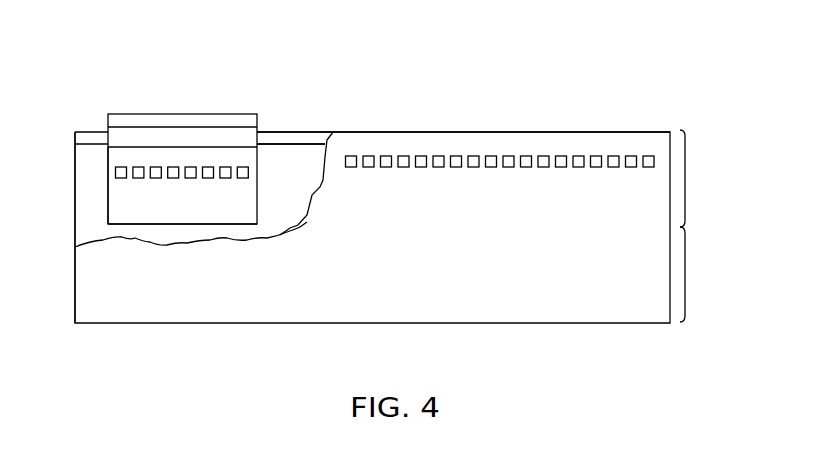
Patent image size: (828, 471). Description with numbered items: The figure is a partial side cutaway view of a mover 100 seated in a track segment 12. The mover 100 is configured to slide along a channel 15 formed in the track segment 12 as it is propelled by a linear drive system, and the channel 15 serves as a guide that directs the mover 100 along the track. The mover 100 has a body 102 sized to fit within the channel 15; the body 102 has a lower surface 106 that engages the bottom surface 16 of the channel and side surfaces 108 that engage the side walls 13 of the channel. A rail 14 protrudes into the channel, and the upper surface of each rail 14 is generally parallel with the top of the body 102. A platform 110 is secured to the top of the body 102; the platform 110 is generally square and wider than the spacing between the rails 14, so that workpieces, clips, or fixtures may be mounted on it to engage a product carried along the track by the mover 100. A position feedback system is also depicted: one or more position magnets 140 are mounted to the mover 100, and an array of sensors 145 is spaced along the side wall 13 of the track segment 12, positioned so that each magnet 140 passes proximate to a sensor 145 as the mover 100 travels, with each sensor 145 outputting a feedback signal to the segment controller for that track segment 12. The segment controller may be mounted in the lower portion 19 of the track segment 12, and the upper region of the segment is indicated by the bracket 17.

The track segment 12 is at (638, 105).
The side wall 13 is at (302, 181).
The rail 14 is at (307, 130).
The channel 15 is at (90, 182).
The bottom surface 16 is at (273, 231).
The upper substrate layer 17 is at (686, 177).
The lower portion 19 is at (686, 272).
The mover 100 is at (177, 112).
The body 102 is at (190, 208).
The lower surface 106 is at (147, 228).
The side surface 108 is at (177, 215).
The platform 110 is at (128, 122).
The position magnet 140 is at (207, 179).
The sensor 145 is at (527, 168).